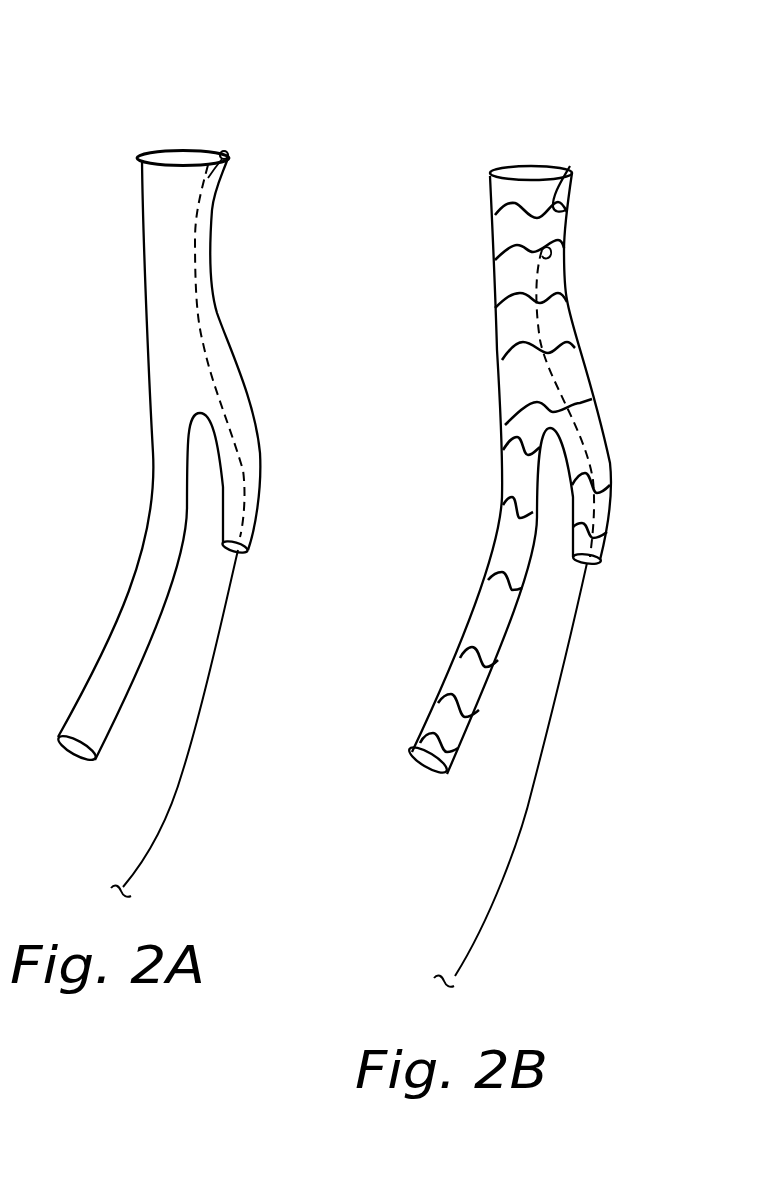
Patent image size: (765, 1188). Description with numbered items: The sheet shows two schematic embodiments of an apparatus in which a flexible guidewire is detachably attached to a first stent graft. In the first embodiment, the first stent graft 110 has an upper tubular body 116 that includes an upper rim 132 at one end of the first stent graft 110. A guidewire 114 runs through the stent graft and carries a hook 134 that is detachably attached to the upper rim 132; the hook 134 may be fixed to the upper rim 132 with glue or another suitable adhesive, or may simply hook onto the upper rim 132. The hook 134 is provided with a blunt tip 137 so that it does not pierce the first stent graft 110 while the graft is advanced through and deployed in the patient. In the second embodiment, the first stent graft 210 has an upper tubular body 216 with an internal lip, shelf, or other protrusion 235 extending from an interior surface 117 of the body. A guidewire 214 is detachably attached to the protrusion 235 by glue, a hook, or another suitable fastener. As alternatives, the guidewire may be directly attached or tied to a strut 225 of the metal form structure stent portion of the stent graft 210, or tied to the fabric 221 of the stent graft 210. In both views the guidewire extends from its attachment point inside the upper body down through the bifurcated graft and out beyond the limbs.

In FIG. 2A, the first stent graft 110 is at (182, 122).
In FIG. 2A, the upper tubular body 116 is at (170, 219).
In FIG. 2A, the upper rim 132 is at (142, 199).
In FIG. 2A, the hook 134 is at (226, 152).
In FIG. 2A, the blunt tip 137 is at (227, 160).
In FIG. 2A, the guidewire 114 is at (203, 338).
In FIG. 2B, the first stent graft 210 is at (527, 130).
In FIG. 2B, the upper tubular body 216 is at (508, 224).
In FIG. 2B, the interior surface 117 is at (570, 166).
In FIG. 2B, the fabric 221 is at (523, 380).
In FIG. 2B, the strut 225 is at (520, 408).
In FIG. 2B, the protrusion 235 is at (542, 250).
In FIG. 2B, the guidewire 214 is at (558, 380).